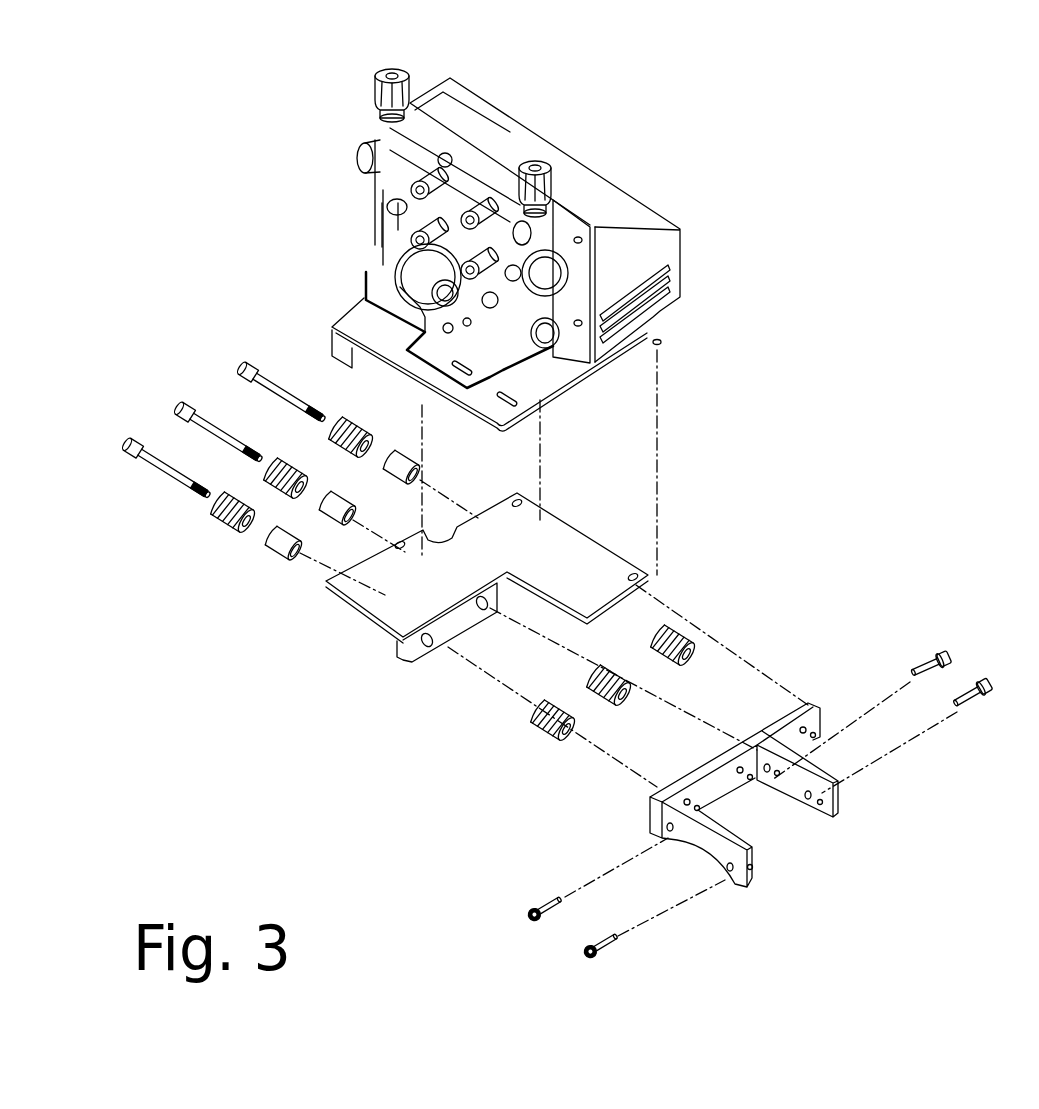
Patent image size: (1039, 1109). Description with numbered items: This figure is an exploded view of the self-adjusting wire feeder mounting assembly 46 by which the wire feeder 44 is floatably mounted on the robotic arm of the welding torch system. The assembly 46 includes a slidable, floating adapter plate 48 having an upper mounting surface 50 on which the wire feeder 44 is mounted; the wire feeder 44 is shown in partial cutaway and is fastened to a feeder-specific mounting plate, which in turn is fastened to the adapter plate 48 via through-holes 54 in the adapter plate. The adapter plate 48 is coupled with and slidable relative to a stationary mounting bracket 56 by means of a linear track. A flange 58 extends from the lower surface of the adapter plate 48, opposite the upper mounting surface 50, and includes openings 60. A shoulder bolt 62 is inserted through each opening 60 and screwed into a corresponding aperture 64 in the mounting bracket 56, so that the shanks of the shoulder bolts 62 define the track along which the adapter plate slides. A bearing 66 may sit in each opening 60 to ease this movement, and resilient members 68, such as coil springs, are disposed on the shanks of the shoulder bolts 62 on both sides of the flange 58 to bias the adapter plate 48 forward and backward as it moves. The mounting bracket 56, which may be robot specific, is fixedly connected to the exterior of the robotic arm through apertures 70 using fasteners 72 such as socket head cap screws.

The wire feeder 44 is at (378, 247).
The self-adjusting wire feeder mounting assembly 46 is at (782, 458).
The adapter plate 48 is at (469, 578).
The upper mounting surface 50 is at (330, 323).
The through-holes 54 is at (403, 541).
The mounting bracket 56 is at (676, 803).
The flange 58 is at (391, 648).
The opening 60 is at (427, 653).
The shoulder bolt 62 is at (153, 443).
The aperture 64 is at (688, 799).
The bearing 66 is at (293, 542).
The resilient members 68 is at (244, 502).
The apertures 70 is at (673, 836).
The fasteners 72 is at (929, 655).